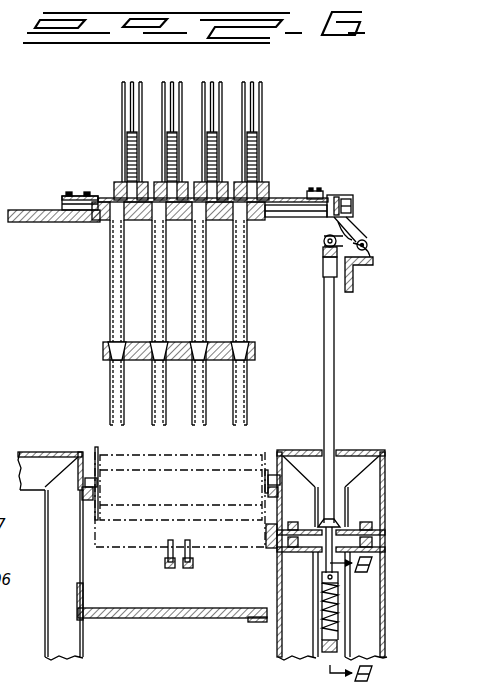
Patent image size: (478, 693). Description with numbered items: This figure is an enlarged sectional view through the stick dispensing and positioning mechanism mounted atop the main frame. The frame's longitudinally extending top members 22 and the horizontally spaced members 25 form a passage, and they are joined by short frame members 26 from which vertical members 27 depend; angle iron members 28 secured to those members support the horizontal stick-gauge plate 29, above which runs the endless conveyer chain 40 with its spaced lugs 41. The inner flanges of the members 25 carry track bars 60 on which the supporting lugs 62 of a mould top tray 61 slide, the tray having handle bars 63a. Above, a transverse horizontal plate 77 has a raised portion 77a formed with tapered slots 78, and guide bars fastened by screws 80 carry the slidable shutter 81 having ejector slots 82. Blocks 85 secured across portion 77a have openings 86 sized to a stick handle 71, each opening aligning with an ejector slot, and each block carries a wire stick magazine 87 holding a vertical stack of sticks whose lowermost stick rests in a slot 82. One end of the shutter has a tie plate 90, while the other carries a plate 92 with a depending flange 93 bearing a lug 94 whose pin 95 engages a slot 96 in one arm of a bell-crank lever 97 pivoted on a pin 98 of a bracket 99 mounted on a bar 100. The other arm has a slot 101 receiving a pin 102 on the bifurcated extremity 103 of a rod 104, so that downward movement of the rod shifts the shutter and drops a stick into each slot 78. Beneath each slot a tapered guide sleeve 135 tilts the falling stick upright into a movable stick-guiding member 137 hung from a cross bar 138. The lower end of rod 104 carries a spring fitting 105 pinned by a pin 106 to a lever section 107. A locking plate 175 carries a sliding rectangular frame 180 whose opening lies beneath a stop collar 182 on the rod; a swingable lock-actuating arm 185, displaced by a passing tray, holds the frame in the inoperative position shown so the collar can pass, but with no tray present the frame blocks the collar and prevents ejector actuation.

The top member 22 is at (382, 452).
The longitudinally extending member 25 is at (58, 452).
The short frame member 26 is at (37, 482).
The vertical member 27 is at (82, 640).
The angle iron member 28 is at (84, 597).
The stick-gauge plate 29 is at (166, 620).
The endless conveyer chain 40 is at (177, 568).
The lug 41 is at (192, 550).
The track bar 60 is at (94, 496).
The mould top tray 61 is at (118, 470).
The supporting lug 62 is at (98, 483).
The handle bar 63a is at (216, 452).
The stick handle 71 is at (127, 140).
The horizontal plate 77 is at (30, 212).
The raised portion 77a is at (104, 200).
The tapered slot 78 is at (104, 222).
The screw 80 is at (80, 196).
The slidable shutter 81 is at (190, 198).
The ejector slot 82 is at (268, 193).
The block 85 is at (262, 192).
The opening 86 is at (233, 186).
The stick magazine 87 is at (264, 106).
The tie plate 90 is at (69, 194).
The plate 92 is at (314, 190).
The depending flange 93 is at (322, 216).
The lug 94 is at (333, 205).
The pin 95 is at (347, 211).
The slot 96 is at (341, 204).
The bell-crank lever 97 is at (350, 222).
The pin 98 is at (356, 234).
The bracket 99 is at (368, 247).
The bar 100 is at (358, 268).
The slot 101 is at (328, 255).
The pin 102 is at (323, 242).
The bifurcated extremity 103 is at (327, 270).
The rod 104 is at (335, 357).
The spring fitting 105 is at (308, 630).
The pin 106 is at (338, 648).
The lever section 107 is at (330, 654).
The tapered guide sleeve 135 is at (110, 301).
The stick-guiding member 137 is at (110, 385).
The cross bar 138 is at (136, 350).
The plate 175 is at (280, 560).
The rectangular frame 180 is at (363, 522).
The stop collar 182 is at (323, 526).
The lock-actuating arm 185 is at (266, 533).